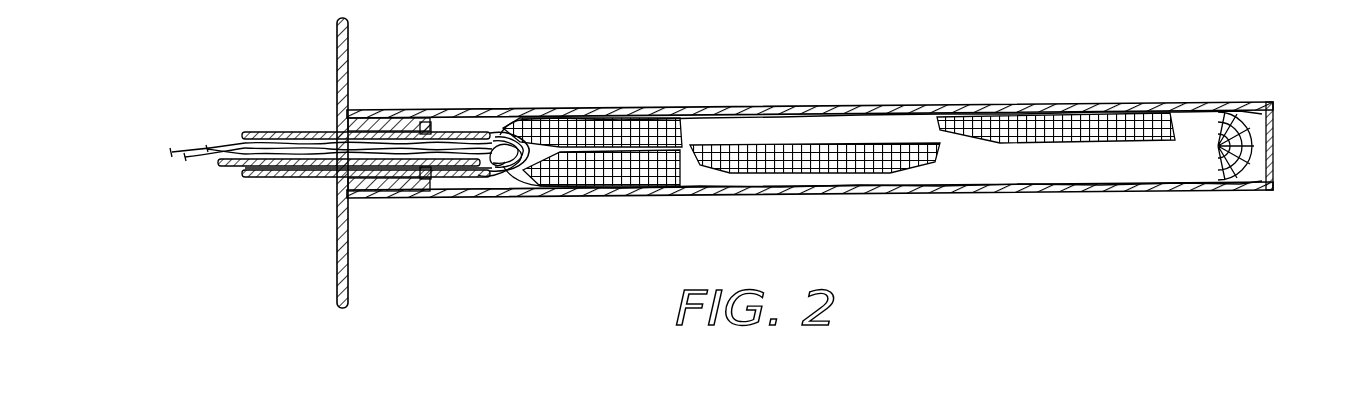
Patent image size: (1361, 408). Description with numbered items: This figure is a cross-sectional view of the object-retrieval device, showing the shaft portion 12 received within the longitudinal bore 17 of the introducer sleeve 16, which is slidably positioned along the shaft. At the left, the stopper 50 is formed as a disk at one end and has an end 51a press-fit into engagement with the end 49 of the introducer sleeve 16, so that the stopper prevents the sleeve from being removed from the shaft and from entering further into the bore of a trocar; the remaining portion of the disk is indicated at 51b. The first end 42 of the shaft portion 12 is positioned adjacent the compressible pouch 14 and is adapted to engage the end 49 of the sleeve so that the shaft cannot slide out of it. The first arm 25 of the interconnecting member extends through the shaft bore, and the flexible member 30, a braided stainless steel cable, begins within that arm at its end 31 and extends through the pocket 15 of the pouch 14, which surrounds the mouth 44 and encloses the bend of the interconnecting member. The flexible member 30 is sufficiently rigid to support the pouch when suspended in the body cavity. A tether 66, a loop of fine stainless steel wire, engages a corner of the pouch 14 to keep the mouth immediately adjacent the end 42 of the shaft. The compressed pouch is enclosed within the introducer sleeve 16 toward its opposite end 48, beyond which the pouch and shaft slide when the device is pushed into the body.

The shaft portion 12 is at (272, 133).
The compressible pouch 14 is at (782, 150).
The pocket 15 is at (556, 112).
The introducer sleeve 16 is at (1041, 103).
The longitudinal bore 17 is at (1276, 122).
The first arm 25 is at (233, 167).
The flexible member 30 is at (398, 118).
The end of flexible member 31 is at (405, 180).
The first end of shaft 42 is at (481, 125).
The mouth 44 is at (503, 135).
The end of introducer sleeve 48 is at (1276, 108).
The end of introducer sleeve 49 is at (361, 95).
The stopper 50 is at (330, 68).
The end of stopper 51a is at (422, 191).
The plate lower portion 51b is at (349, 272).
The tether 66 is at (172, 152).